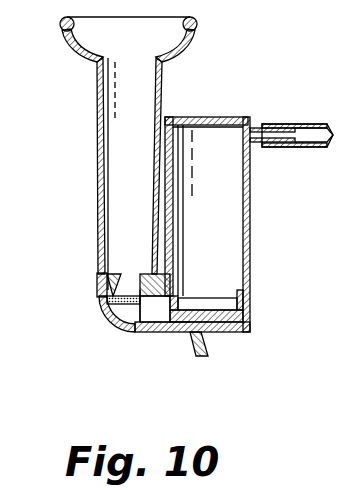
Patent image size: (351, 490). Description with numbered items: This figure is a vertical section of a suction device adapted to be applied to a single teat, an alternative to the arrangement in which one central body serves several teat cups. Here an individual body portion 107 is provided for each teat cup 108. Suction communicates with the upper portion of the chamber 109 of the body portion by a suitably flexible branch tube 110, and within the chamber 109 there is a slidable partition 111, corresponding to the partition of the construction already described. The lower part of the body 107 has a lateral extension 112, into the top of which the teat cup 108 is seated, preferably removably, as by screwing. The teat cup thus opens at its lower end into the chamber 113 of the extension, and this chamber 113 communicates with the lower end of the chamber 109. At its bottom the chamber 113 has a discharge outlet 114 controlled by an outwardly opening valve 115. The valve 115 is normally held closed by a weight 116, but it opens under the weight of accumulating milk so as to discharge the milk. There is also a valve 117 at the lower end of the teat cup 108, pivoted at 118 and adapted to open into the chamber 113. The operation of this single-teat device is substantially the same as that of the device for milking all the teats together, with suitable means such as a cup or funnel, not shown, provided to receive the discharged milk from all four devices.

The body portion 107 is at (250, 233).
The teat cup 108 is at (98, 158).
The chamber 109 is at (228, 200).
The branch tube 110 is at (300, 147).
The slidable partition 111 is at (215, 305).
The lateral extension 112 is at (115, 322).
The chamber 113 is at (142, 310).
The discharge outlet 114 is at (161, 332).
The valve 115 is at (177, 332).
The weight 116 is at (208, 350).
The valve 117 is at (128, 298).
The pivot 118 is at (102, 311).